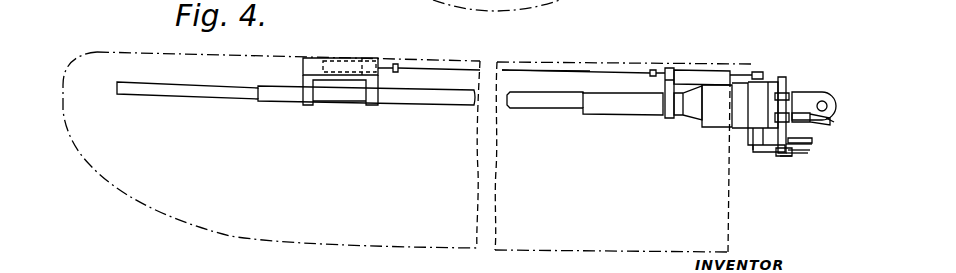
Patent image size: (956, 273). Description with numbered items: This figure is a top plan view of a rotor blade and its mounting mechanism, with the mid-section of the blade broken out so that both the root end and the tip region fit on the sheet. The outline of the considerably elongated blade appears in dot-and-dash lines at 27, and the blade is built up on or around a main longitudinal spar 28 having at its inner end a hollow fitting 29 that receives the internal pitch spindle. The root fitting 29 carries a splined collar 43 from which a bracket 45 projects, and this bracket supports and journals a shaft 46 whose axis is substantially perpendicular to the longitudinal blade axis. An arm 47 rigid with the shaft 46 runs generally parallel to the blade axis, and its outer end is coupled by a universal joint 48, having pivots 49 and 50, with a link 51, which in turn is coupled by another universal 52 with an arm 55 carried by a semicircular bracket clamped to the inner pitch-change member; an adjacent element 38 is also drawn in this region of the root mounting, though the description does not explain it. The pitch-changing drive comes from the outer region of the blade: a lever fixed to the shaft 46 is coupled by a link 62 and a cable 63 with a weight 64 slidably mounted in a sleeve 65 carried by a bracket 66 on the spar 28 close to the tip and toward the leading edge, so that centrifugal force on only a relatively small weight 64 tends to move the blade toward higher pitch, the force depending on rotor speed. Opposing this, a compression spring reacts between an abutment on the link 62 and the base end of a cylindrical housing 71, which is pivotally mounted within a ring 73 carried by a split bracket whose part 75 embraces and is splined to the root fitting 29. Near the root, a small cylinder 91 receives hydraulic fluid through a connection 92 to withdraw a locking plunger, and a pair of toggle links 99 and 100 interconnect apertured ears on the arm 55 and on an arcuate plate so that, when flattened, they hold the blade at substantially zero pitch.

The blade outline 27 is at (243, 240).
The main longitudinal spar 28 is at (418, 103).
The hollow fitting 29 is at (716, 120).
The lever head 38 is at (826, 82).
The collar 43 is at (762, 91).
The bracket 45 is at (755, 142).
The shaft 46 is at (758, 152).
The arm 47 is at (771, 152).
The universal joint 48 is at (786, 158).
The pivot 49 is at (810, 152).
The pivot 50 is at (789, 154).
The link 51 is at (790, 146).
The universal 52 is at (812, 125).
The arm 55 is at (790, 100).
The link 62 is at (741, 75).
The cable 63 is at (580, 72).
The weight 64 is at (330, 70).
The sleeve 65 is at (306, 58).
The bracket 66 is at (303, 80).
The cylindrical housing 71 is at (706, 62).
The ring 73 is at (669, 69).
The split bracket part 75 is at (672, 118).
The small cylinder 91 is at (830, 120).
The connection 92 is at (812, 140).
The toggle link 99 is at (755, 105).
The toggle link 100 is at (787, 97).